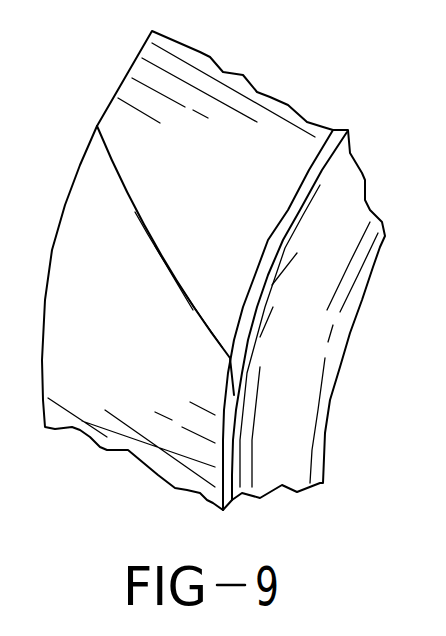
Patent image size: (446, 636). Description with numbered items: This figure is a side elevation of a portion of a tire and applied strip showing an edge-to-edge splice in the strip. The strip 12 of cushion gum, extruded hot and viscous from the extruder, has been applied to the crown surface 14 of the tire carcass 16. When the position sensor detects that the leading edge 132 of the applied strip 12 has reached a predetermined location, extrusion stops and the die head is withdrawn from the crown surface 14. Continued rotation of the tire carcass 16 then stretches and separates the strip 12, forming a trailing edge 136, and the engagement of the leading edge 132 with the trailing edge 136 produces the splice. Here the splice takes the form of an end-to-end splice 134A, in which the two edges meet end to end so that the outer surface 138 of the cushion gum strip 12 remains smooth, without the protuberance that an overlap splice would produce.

The strip 12 is at (203, 53).
The crown surface 14 is at (318, 170).
The tire carcass 16 is at (290, 408).
The leading edge 132 is at (133, 212).
The end-to-end splice 134A is at (193, 310).
The trailing edge 136 is at (170, 263).
The outer surface 138 is at (93, 413).